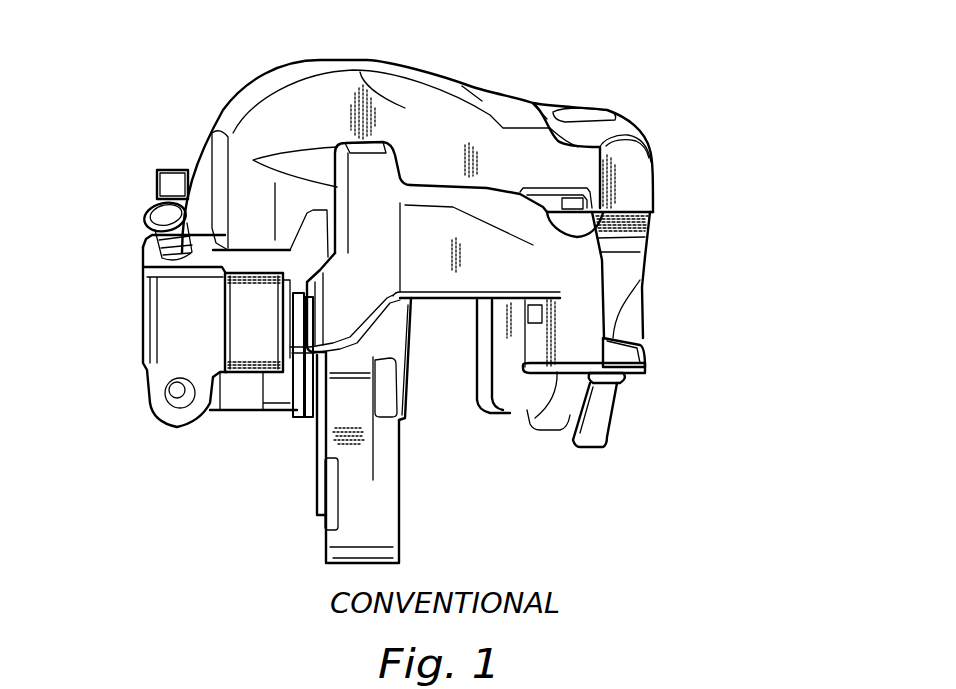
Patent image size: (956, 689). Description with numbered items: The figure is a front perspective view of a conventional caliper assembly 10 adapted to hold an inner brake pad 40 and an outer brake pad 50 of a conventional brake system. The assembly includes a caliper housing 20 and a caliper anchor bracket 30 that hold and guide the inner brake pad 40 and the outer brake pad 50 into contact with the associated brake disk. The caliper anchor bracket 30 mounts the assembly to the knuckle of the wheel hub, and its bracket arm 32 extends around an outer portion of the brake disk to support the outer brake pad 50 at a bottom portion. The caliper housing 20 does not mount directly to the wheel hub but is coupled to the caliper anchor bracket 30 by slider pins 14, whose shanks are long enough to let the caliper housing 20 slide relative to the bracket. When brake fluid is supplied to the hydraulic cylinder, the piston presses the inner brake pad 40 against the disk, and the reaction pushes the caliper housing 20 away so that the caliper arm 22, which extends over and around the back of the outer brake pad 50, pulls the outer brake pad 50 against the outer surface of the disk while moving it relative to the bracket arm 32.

The caliper assembly 10 is at (700, 83).
The slider pins 14 is at (293, 327).
The caliper housing 20 is at (413, 82).
The caliper arm 22 is at (626, 240).
The caliper anchor bracket 30 is at (352, 518).
The bracket arm 32 is at (585, 335).
The inner brake pad 40 is at (407, 395).
The outer brake pad 50 is at (507, 387).